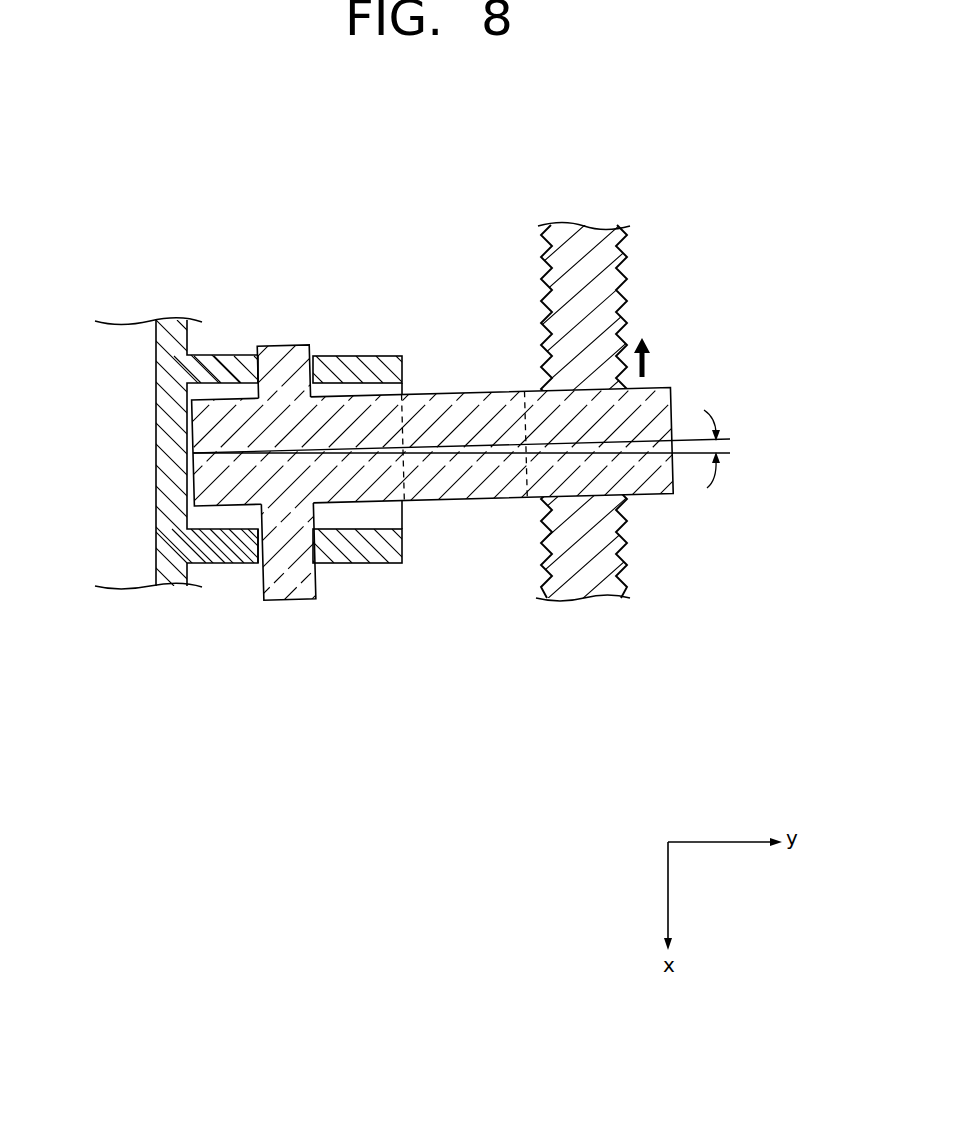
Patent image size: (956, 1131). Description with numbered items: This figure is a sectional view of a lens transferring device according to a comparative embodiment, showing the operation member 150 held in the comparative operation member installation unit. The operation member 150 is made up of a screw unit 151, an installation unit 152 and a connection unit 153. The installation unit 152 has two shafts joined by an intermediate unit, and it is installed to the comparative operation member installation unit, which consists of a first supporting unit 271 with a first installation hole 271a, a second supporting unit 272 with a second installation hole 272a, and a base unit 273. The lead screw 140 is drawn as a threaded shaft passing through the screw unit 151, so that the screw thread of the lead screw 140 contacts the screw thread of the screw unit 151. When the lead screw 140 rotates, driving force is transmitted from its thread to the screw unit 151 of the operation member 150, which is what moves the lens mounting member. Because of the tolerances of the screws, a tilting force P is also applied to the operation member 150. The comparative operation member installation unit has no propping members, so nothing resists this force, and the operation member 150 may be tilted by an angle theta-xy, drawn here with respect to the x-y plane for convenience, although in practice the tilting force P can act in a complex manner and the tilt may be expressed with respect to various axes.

The lead screw 140 is at (578, 243).
The operation member 150 is at (451, 466).
The screw unit 151 is at (655, 408).
The installation unit 152 is at (207, 486).
The connection unit 153 is at (483, 398).
The first supporting unit 271 is at (353, 362).
The first installation hole 271a is at (256, 366).
The second supporting unit 272 is at (367, 560).
The second installation hole 272a is at (258, 548).
The base unit 273 is at (397, 515).